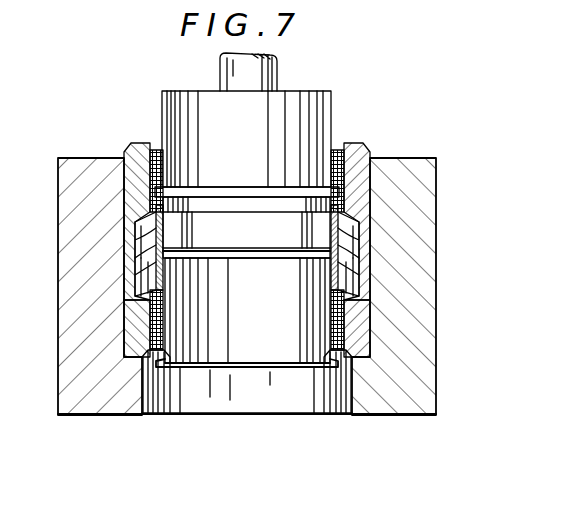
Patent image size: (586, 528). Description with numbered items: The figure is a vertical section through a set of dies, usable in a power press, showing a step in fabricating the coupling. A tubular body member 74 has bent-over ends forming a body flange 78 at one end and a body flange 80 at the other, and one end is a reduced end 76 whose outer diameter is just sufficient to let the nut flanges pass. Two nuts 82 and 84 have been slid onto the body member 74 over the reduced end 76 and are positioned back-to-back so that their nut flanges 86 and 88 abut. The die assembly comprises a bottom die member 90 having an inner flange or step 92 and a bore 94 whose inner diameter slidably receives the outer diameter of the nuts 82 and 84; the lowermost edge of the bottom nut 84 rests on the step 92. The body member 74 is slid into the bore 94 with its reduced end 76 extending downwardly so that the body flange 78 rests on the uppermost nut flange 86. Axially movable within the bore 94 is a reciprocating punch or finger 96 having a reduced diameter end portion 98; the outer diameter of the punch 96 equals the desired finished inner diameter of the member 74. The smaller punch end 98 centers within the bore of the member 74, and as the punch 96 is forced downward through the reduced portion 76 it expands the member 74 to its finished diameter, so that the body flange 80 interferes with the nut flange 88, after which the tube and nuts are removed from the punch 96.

The body member 74 is at (163, 289).
The reduced end 76 is at (168, 327).
The body flange 78 is at (160, 200).
The body flange 80 is at (184, 368).
The nut 82 is at (128, 146).
The nut 84 is at (130, 338).
The nut flange 86 is at (157, 240).
The nut flange 88 is at (140, 266).
The bottom die member 90 is at (437, 262).
The step 92 is at (353, 359).
The bore 94 is at (302, 373).
The punch 96 is at (322, 108).
The reduced diameter end portion 98 is at (163, 203).